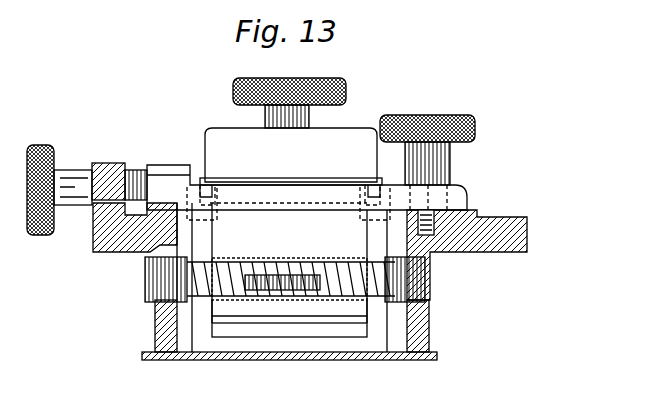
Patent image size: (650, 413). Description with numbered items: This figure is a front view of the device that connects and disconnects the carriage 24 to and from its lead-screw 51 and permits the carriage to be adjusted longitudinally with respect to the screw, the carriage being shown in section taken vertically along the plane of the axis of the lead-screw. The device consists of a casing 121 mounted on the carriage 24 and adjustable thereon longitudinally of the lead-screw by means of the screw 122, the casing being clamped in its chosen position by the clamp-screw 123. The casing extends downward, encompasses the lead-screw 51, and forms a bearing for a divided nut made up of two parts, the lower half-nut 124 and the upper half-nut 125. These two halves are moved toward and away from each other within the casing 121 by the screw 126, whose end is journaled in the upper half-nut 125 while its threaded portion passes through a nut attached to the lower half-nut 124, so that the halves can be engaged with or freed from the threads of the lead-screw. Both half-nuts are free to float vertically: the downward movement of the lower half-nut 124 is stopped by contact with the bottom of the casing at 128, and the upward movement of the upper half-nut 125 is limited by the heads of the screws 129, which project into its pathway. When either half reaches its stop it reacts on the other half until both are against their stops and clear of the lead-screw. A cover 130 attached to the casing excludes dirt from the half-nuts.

The screw 122 is at (78, 170).
The screw 126 is at (233, 90).
The cover 130 is at (215, 140).
The screws 129 is at (370, 188).
The clamp-screw 123 is at (455, 115).
The casing 121 is at (462, 197).
The carriage 24 is at (510, 238).
The lead-screw 51 is at (432, 288).
The upper half-nut 125 is at (328, 237).
The lower half-nut 124 is at (270, 315).
The bottom of the casing 128 is at (340, 337).